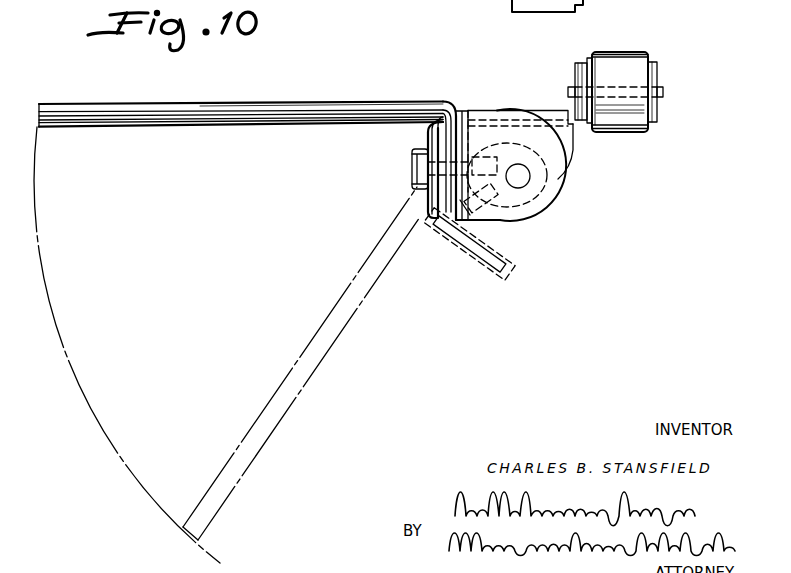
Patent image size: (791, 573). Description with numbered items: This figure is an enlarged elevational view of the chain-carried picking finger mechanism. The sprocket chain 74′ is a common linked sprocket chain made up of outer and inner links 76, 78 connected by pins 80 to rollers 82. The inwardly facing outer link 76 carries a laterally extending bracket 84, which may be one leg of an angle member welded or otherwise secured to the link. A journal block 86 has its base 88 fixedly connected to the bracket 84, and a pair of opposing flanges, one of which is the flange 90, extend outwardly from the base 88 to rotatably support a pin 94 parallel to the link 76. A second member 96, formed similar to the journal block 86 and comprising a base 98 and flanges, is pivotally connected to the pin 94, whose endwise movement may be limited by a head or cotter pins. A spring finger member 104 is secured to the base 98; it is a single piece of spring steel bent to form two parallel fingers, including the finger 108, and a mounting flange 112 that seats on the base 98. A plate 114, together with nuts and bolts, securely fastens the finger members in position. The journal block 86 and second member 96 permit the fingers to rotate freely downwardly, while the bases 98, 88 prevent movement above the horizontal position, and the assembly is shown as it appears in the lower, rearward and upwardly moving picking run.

The sprocket chain 74′ is at (670, 75).
The outer link 76 is at (580, 63).
The inner link 78 is at (588, 58).
The pin 80 is at (570, 92).
The roller 82 is at (615, 52).
The bracket 84 is at (574, 132).
The journal block 86 is at (482, 110).
The base 88 is at (505, 110).
The flange 90 is at (560, 172).
The pin 94 is at (525, 182).
The second member 96 is at (523, 223).
The base 98 is at (462, 214).
The spring finger member 104 is at (278, 121).
The finger 108 is at (293, 102).
The mounting flange 112 is at (456, 103).
The plate 114 is at (426, 134).